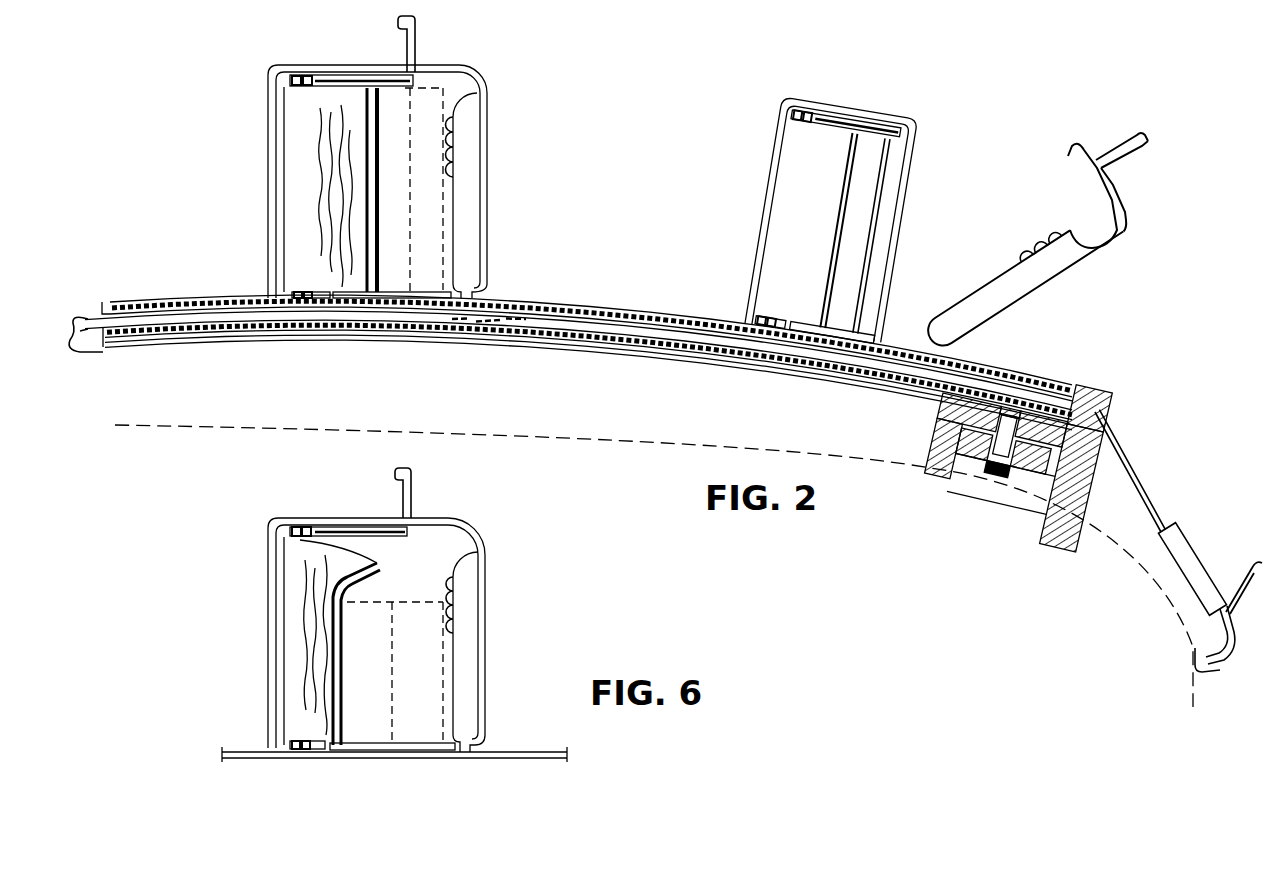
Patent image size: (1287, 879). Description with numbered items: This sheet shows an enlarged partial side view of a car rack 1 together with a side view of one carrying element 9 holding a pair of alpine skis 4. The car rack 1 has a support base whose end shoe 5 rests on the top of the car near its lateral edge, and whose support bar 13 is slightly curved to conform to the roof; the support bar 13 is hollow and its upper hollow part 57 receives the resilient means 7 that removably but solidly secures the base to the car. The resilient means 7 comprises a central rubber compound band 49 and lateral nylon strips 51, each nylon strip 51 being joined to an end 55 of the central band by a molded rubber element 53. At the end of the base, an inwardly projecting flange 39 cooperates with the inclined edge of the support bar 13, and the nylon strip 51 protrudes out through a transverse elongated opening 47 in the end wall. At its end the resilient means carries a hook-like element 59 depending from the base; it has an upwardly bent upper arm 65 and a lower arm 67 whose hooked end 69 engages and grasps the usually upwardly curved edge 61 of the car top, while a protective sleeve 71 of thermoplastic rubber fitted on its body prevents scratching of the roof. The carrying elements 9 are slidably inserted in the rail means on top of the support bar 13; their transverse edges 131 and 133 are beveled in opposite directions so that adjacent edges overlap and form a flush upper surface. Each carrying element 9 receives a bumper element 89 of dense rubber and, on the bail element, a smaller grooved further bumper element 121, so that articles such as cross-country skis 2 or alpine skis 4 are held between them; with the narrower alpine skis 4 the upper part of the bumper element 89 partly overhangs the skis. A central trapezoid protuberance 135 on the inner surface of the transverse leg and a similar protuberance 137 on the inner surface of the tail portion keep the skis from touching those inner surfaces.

In FIG. 2, the car rack 1 is at (559, 230).
In FIG. 2, the cross-country skis 2 is at (430, 100).
In FIG. 6, the alpine skis 4 is at (425, 664).
In FIG. 2, the end shoe 5 is at (940, 470).
In FIG. 2, the resilient means 7 is at (566, 332).
In FIG. 2, the carrying element 9 is at (893, 184).
In FIG. 2, the support bar 13 is at (72, 333).
In FIG. 2, the inwardly projecting flange 39 is at (1068, 384).
In FIG. 2, the transverse elongated opening 47 is at (1106, 411).
In FIG. 2, the central rubber compound band 49 is at (221, 322).
In FIG. 2, the nylon strip 51 is at (636, 333).
In FIG. 2, the rubber element 53 is at (512, 336).
In FIG. 2, the end of central rubber band 55 is at (492, 337).
In FIG. 2, the upper hollow part 57 is at (698, 325).
In FIG. 2, the hook-like element 59 is at (1222, 550).
In FIG. 2, the edge of the top of the car 61 is at (1232, 657).
In FIG. 2, the upper arm 65 is at (1248, 591).
In FIG. 2, the lower arm 67 is at (1233, 642).
In FIG. 2, the hooked end 69 is at (1210, 672).
In FIG. 2, the protective sleeve 71 is at (1182, 560).
In FIG. 2, the bumper element 89 is at (295, 184).
In FIG. 6, the bumper element 89 is at (294, 620).
In FIG. 2, the further bumper element 121 is at (1046, 238).
In FIG. 6, the further bumper element 121 is at (460, 596).
In FIG. 2, the transverse edge of the long side 131 is at (608, 310).
In FIG. 2, the transverse edge of the short side 133 is at (612, 308).
In FIG. 6, the central trapezoid shaped longitudinal protuberance 135 is at (370, 744).
In FIG. 6, the central longitudinal trapezoid protuberance 137 is at (350, 528).